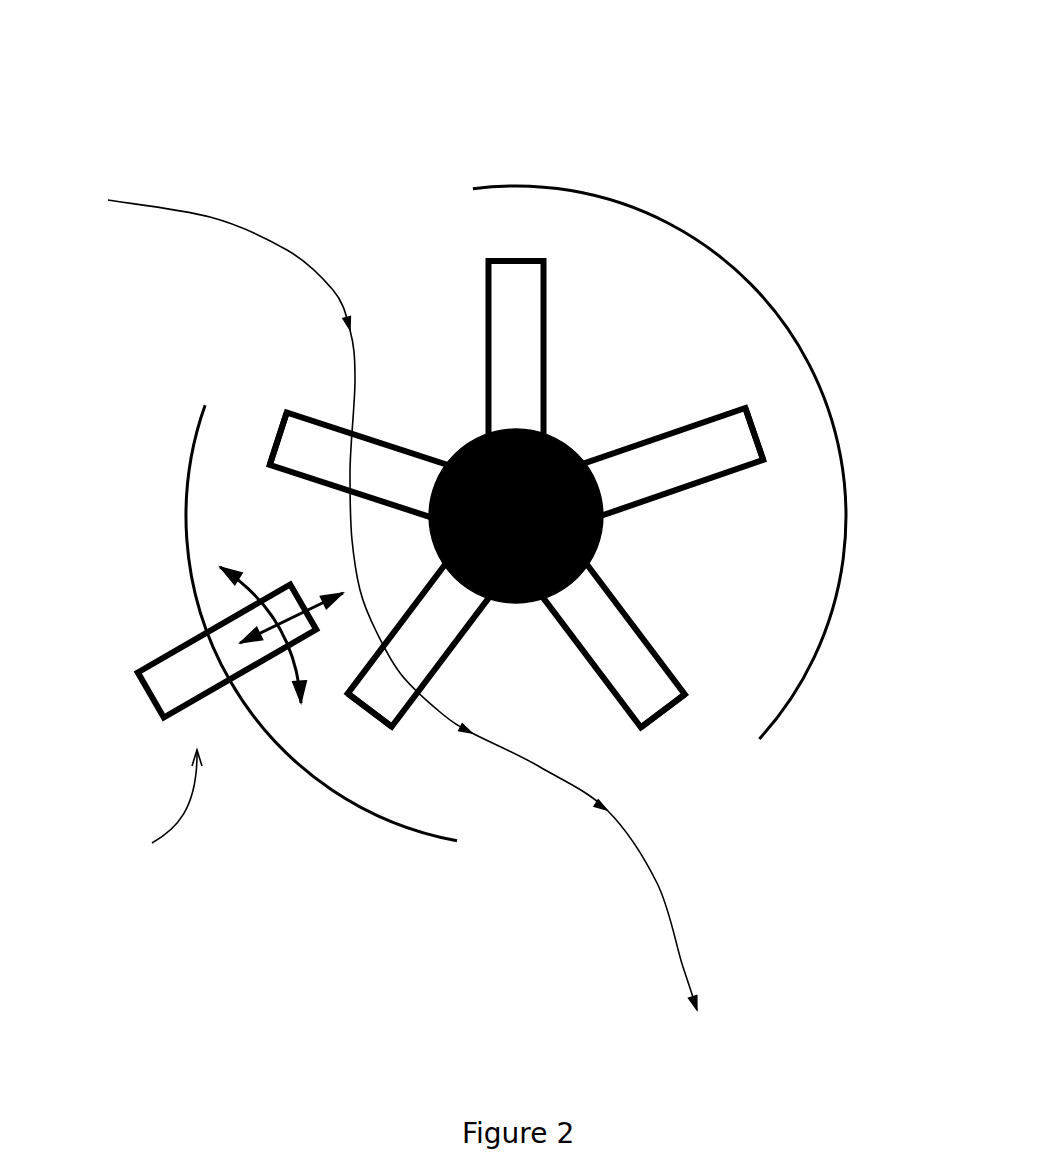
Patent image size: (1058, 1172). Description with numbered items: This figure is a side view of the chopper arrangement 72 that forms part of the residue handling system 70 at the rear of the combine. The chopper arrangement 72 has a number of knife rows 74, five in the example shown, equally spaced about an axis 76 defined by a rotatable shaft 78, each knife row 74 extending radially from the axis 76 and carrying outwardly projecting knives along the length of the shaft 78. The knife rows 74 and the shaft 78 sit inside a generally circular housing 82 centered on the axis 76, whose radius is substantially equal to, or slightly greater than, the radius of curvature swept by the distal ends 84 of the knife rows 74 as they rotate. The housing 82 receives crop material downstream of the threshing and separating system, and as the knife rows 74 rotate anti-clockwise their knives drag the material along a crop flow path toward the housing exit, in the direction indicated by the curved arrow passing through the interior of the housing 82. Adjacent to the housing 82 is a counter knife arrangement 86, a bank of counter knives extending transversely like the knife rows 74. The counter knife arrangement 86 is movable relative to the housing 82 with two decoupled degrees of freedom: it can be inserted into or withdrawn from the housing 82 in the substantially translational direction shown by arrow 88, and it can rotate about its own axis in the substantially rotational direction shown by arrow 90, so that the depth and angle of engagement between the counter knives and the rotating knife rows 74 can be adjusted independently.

The residue handling system 70 is at (805, 147).
The chopper arrangement 72 is at (505, 527).
The knife row 74 is at (545, 305).
The axis 76 is at (690, 516).
The rotatable shaft 78 is at (600, 540).
The housing 82 is at (583, 188).
The distal end 84 is at (522, 260).
The counter knife arrangement 86 is at (163, 812).
The arrow indicating translational direction 88 is at (237, 622).
The arrow indicating rotational direction 90 is at (237, 567).